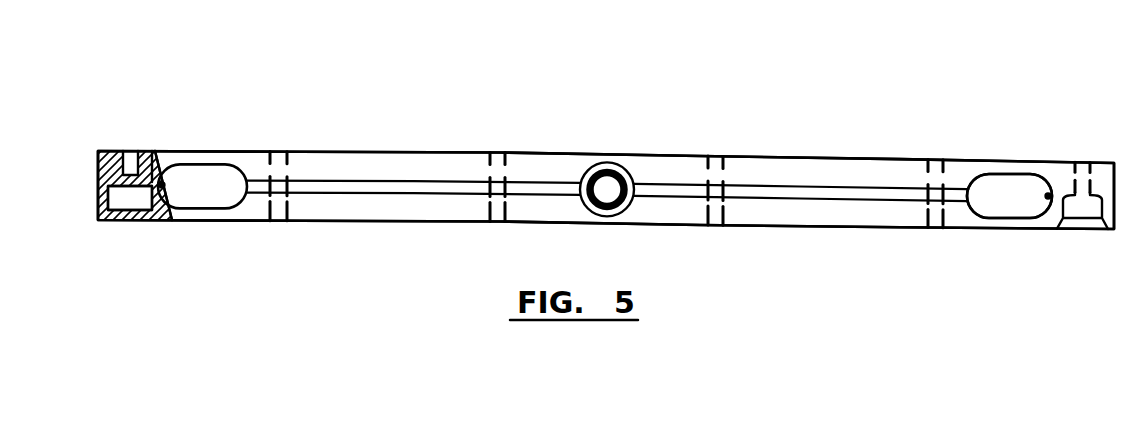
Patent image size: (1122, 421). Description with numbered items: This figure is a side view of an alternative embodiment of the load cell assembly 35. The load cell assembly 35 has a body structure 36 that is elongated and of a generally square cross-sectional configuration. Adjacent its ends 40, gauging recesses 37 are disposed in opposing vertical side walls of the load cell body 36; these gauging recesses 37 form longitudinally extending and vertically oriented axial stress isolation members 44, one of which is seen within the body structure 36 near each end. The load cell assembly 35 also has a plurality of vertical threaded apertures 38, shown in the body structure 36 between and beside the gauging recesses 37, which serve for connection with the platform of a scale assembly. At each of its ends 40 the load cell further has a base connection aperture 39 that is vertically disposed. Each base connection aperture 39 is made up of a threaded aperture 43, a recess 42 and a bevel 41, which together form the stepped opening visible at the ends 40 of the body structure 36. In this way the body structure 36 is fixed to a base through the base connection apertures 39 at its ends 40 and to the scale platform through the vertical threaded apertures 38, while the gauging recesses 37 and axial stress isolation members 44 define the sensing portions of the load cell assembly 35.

The load cell assembly 35 is at (737, 97).
The body structure 36 is at (388, 167).
The gauging recesses 37 is at (204, 166).
The vertical threaded apertures 38 is at (496, 163).
The base connection aperture 39 is at (132, 240).
The ends 40 is at (98, 172).
The bevel 41 is at (112, 217).
The recess 42 is at (139, 207).
The threaded aperture 43 is at (129, 162).
The axial stress isolation members 44 is at (1005, 210).